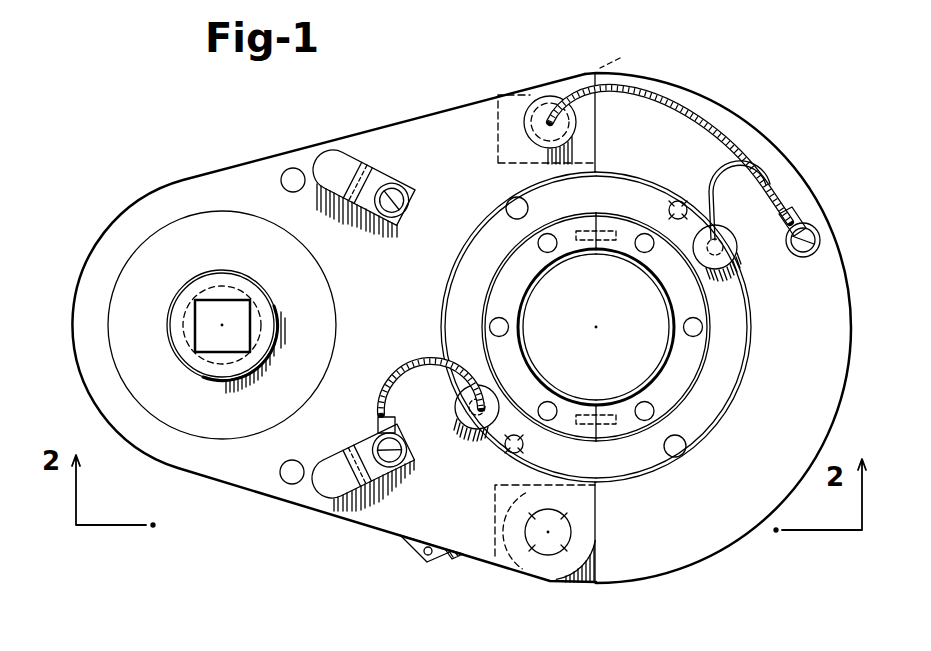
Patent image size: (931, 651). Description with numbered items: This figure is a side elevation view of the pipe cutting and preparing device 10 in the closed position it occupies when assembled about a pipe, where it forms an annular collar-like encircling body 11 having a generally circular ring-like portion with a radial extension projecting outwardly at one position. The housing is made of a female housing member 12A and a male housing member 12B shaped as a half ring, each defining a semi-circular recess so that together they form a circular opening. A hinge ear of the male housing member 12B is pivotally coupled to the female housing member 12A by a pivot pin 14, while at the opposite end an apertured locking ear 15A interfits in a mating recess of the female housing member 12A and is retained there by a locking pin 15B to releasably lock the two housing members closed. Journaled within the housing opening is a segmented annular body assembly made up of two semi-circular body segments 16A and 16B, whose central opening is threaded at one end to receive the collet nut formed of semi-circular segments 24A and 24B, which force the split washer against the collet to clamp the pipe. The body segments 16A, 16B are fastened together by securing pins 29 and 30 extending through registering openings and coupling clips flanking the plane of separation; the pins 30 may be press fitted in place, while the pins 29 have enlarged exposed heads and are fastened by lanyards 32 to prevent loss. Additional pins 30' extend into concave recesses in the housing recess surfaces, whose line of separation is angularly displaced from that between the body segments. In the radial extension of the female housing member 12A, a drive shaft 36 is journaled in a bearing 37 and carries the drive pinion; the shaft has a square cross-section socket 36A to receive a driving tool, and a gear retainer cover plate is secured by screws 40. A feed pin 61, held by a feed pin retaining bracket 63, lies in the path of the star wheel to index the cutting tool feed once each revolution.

The pipe cutting and preparing device 10 is at (479, 72).
The annular collar-like encircling body 11 is at (567, 72).
The female housing member 12A is at (172, 185).
The male housing member 12B is at (752, 130).
The pivot pin 14 is at (549, 552).
The apertured locking ear 15A is at (633, 54).
The locking pin 15B is at (543, 100).
The semi-circular annular body segment 16A is at (452, 292).
The semi-circular annular body segment 16B is at (718, 404).
The collet nut segment 24A is at (497, 280).
The collet nut segment 24B is at (693, 360).
The securing pin 29 is at (740, 258).
The securing pin 30 is at (581, 320).
The additional pin 30' is at (598, 327).
The lanyard 32 is at (680, 107).
The drive shaft 36 is at (252, 357).
The square cross-section socket 36A is at (219, 352).
The bearing 37 is at (212, 222).
The screws 40 is at (293, 168).
The feed pin 61 is at (334, 492).
The feed pin retaining bracket 63 is at (375, 180).